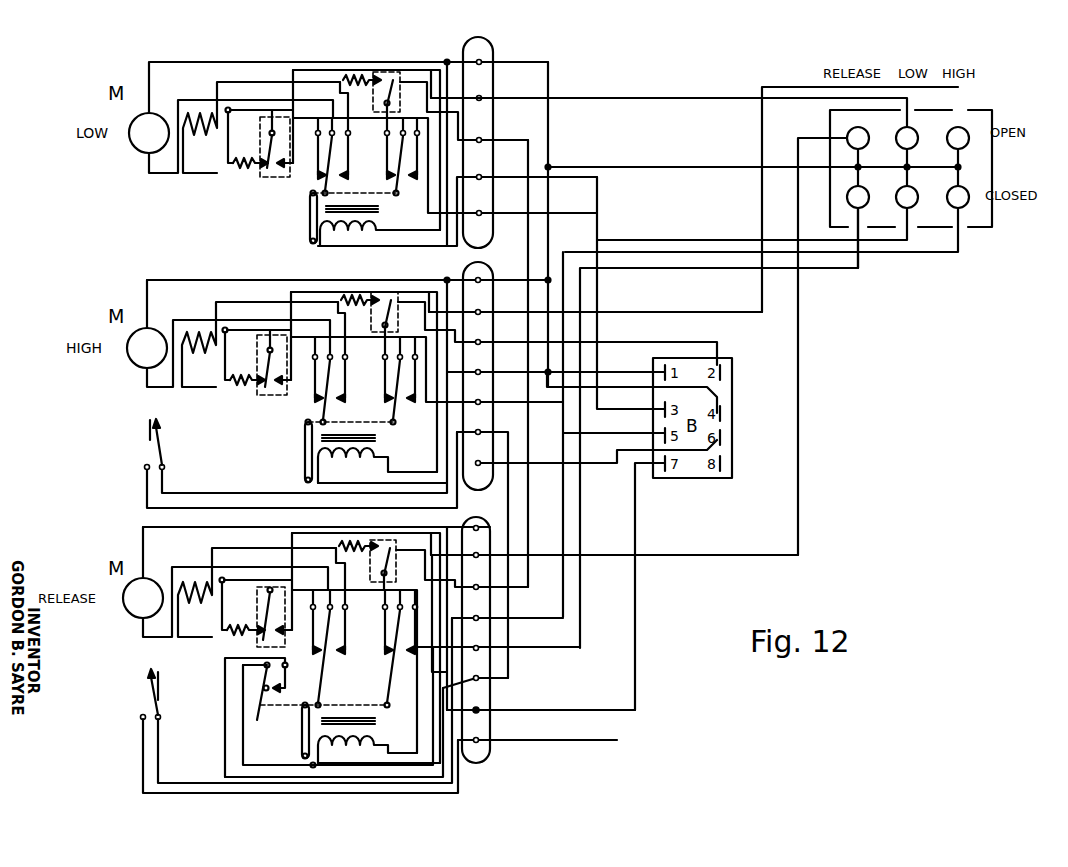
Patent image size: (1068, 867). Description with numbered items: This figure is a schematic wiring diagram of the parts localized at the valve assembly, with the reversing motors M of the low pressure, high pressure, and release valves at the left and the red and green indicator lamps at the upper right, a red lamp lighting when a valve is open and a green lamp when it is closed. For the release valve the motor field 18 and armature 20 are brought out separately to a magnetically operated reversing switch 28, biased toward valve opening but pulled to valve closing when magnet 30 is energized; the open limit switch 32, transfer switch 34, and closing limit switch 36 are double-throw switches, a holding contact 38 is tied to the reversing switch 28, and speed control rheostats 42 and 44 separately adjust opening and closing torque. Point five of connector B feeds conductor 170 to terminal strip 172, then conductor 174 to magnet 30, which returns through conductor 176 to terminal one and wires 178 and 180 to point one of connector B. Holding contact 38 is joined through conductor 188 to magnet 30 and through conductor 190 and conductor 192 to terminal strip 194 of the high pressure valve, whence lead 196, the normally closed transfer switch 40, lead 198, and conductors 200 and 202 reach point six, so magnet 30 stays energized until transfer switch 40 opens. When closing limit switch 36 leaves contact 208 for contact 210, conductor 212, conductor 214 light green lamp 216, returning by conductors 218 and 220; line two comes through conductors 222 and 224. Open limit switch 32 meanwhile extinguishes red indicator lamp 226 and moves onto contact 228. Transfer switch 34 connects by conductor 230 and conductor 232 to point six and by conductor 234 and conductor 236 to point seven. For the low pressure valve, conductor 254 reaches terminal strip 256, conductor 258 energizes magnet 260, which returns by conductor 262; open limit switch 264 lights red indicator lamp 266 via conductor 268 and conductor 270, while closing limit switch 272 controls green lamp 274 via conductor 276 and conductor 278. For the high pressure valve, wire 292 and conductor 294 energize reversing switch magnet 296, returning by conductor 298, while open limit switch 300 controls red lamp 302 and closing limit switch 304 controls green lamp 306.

The field 18 is at (190, 625).
The armature 20 is at (132, 608).
The reversing switch 28 is at (362, 657).
The magnet 30 is at (348, 750).
The open limit switch 32 is at (395, 569).
The transfer switch 34 is at (143, 692).
The closing limit switch 36 is at (274, 613).
The holding contact 38 is at (265, 700).
The transfer switch 40 is at (152, 448).
The speed control rheostat 42 is at (232, 633).
The speed control rheostat 44 is at (372, 549).
The conductor 170 is at (581, 602).
The terminal strip 172 is at (480, 757).
The conductor 174 is at (408, 758).
The conductor 176 is at (448, 767).
The wire 178 is at (560, 527).
The wire 180 is at (615, 372).
The conductor 188 is at (305, 764).
The conductor 190 is at (267, 778).
The conductor 192 is at (511, 633).
The terminal strip 194 is at (480, 483).
The lead 196 is at (252, 493).
The lead 198 is at (198, 508).
The conductor 200 is at (599, 465).
The conductor 202 is at (632, 450).
The contact 208 is at (262, 625).
The contact 210 is at (287, 664).
The conductor 212 is at (413, 363).
The conductor 214 is at (690, 270).
The green lamp 216 is at (867, 207).
The conductor 218 is at (667, 167).
The conductor 220 is at (551, 238).
The conductor 222 is at (445, 520).
The conductor 224 is at (363, 593).
The red indicator lamp 226 is at (846, 132).
The contact 228 is at (511, 434).
The conductor 230 is at (215, 793).
The conductor 232 is at (597, 742).
The conductor 234 is at (180, 783).
The conductor 236 is at (638, 658).
The conductor 254 is at (600, 191).
The terminal strip 256 is at (482, 235).
The conductor 258 is at (380, 246).
The magnet 260 is at (336, 232).
The conductor 262 is at (415, 221).
The open limit switch 264 is at (270, 170).
The red indicator lamp 266 is at (915, 128).
The conductor 268 is at (415, 62).
The conductor 270 is at (665, 98).
The closing limit switch 272 is at (394, 100).
The green lamp 274 is at (917, 206).
The conductor 276 is at (369, 171).
The conductor 278 is at (688, 240).
The wire 292 is at (615, 409).
The conductor 294 is at (358, 460).
The reversing switch magnet 296 is at (378, 454).
The conductor 298 is at (437, 429).
The open limit switch 300 is at (275, 390).
The red lamp 302 is at (967, 130).
The closing limit switch 304 is at (396, 318).
The green lamp 306 is at (967, 206).